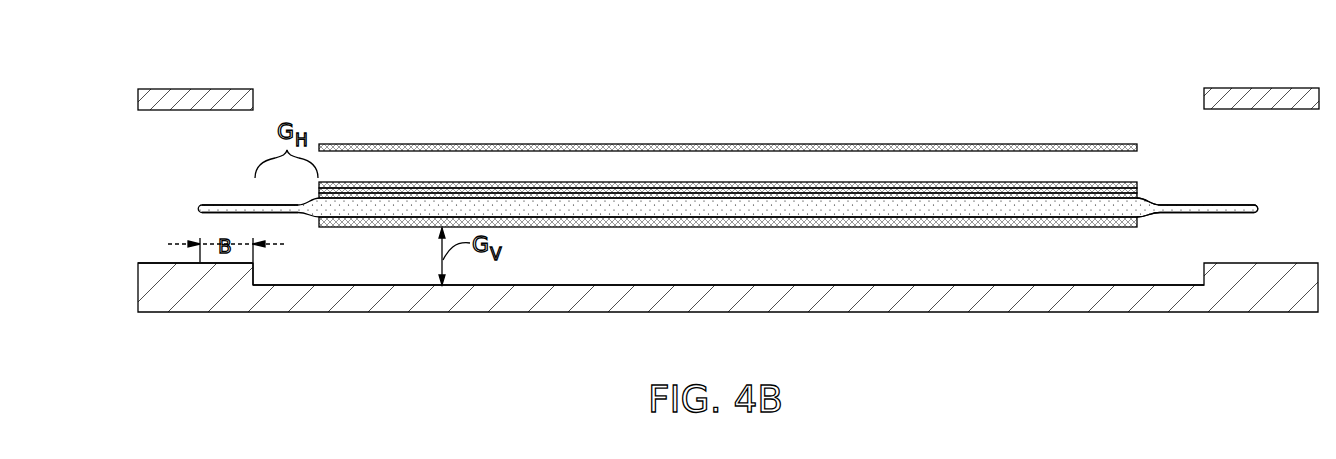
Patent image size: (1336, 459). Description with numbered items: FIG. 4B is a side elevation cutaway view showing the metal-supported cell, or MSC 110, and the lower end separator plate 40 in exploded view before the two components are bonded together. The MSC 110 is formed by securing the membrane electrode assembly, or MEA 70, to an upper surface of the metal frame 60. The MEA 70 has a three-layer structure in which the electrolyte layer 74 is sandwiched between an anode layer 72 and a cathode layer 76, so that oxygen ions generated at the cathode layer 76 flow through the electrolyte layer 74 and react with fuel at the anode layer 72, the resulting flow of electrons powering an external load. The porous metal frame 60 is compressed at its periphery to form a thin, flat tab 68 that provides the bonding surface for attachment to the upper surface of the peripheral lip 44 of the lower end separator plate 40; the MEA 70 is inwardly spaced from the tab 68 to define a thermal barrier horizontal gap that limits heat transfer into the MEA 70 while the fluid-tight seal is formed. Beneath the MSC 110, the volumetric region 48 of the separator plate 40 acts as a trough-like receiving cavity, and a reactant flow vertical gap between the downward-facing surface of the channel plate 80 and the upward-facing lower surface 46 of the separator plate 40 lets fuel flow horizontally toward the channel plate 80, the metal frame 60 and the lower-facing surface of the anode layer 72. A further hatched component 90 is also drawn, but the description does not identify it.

The upper clamp block 90 is at (182, 88).
The channel plate 80 is at (1086, 143).
The cathode layer 76 is at (783, 185).
The electrolyte layer 74 is at (833, 190).
The anode layer 72 is at (883, 196).
The metal frame 60 is at (624, 210).
The tab 68 is at (1245, 205).
The MEA 70 is at (1162, 183).
The MSC 110 is at (192, 170).
The lower end separator plate 40 is at (893, 312).
The peripheral lip 44 is at (152, 262).
The lower surface 46 is at (986, 284).
The volumetric region 48 is at (787, 266).